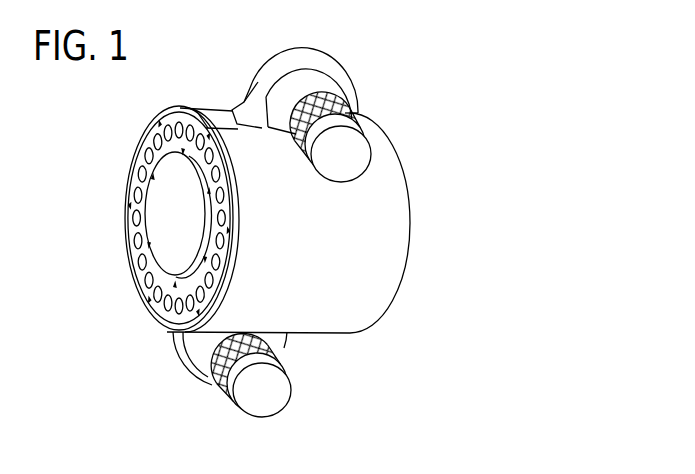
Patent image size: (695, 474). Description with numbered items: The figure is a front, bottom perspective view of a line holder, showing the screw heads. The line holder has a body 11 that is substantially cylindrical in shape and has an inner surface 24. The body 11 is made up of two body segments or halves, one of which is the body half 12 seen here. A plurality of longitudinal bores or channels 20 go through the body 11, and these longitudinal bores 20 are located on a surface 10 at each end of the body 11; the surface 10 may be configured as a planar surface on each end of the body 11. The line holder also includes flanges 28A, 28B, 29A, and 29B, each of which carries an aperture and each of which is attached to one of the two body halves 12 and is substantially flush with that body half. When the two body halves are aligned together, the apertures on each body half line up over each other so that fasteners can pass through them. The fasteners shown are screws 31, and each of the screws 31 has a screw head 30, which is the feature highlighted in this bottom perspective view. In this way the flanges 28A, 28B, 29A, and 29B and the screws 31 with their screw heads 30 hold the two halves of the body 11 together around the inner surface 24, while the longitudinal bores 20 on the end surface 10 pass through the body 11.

The surface 10 is at (148, 236).
The body 11 is at (319, 235).
The body segment 12 is at (373, 268).
The longitudinal bores 20 is at (123, 240).
The inner surface 24 is at (168, 218).
The flange 28A is at (327, 76).
The flange 28B is at (310, 53).
The flange 29A is at (195, 360).
The flange 29B is at (173, 333).
The screw head 30 is at (358, 155).
The screws 31 is at (358, 114).